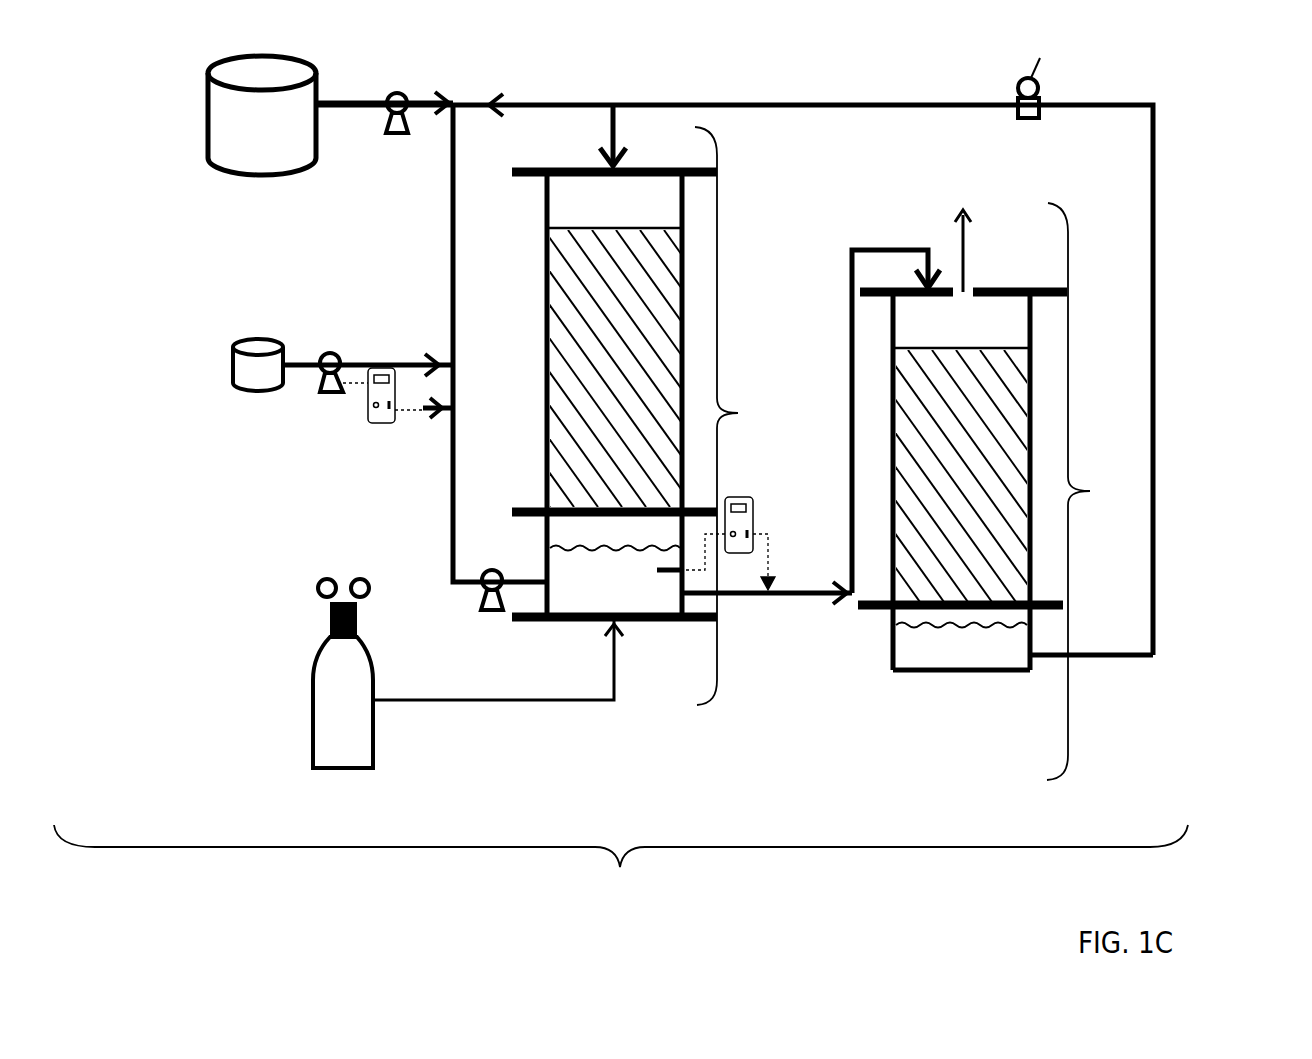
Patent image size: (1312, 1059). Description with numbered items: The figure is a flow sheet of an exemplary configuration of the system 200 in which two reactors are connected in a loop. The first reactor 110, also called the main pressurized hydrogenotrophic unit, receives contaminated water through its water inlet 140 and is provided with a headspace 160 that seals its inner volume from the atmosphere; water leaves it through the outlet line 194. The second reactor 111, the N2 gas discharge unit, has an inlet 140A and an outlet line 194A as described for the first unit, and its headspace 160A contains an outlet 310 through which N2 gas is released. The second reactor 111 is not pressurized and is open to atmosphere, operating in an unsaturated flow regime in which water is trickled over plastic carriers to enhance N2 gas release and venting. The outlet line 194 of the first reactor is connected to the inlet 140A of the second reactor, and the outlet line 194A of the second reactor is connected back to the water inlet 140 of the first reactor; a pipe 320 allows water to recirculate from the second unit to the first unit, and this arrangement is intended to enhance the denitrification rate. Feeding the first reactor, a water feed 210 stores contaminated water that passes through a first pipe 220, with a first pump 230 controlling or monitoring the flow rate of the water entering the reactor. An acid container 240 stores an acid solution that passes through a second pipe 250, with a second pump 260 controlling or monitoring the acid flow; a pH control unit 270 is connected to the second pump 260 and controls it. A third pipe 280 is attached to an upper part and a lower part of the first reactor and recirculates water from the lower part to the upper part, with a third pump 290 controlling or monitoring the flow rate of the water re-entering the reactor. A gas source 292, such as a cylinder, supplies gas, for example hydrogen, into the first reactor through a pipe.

The reactor 110 is at (770, 430).
The second reactor 111 is at (1215, 497).
The water inlet 140 is at (622, 147).
The inlet 140A is at (925, 257).
The headspace 160 is at (660, 197).
The headspace 160A is at (998, 323).
The outlet line 194 is at (777, 597).
The outlet line 194A is at (1157, 600).
The system 200 is at (602, 905).
The water feed 210 is at (240, 160).
The first pipe 220 is at (353, 105).
The first pump 230 is at (393, 132).
The acid container 240 is at (253, 380).
The second pipe 250 is at (300, 367).
The second pump 260 is at (322, 392).
The pH control unit 270 is at (380, 418).
The third pipe 280 is at (451, 303).
The third pump 290 is at (492, 607).
The gas source 292 is at (355, 715).
The outlet 310 is at (963, 268).
The pipe 320 is at (1155, 370).